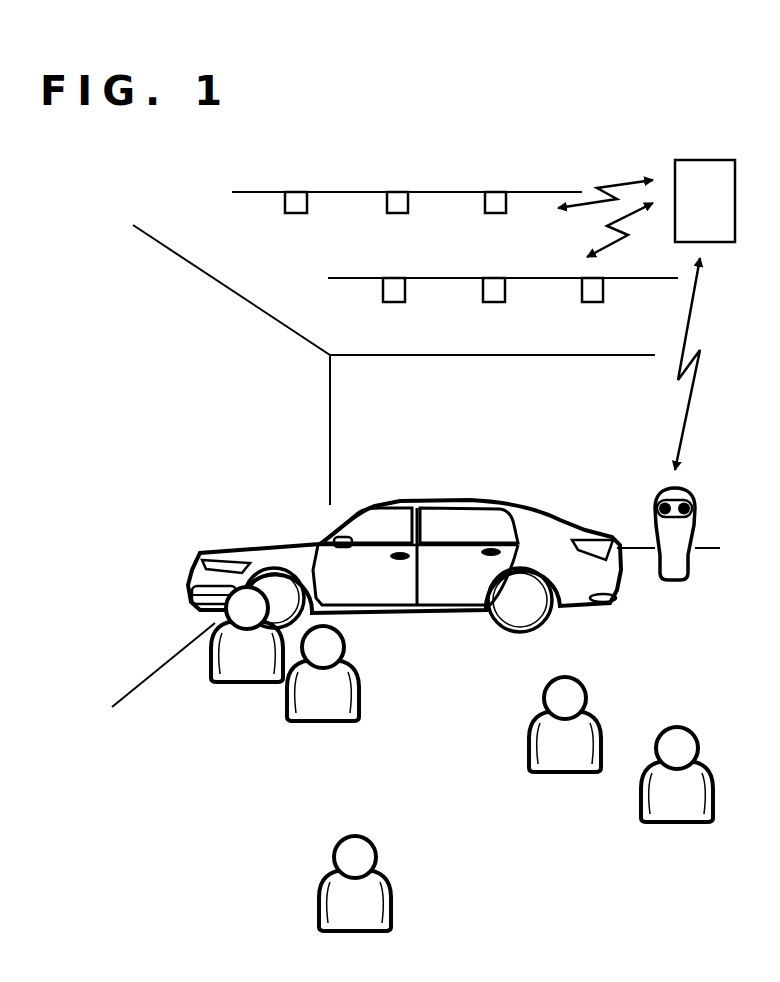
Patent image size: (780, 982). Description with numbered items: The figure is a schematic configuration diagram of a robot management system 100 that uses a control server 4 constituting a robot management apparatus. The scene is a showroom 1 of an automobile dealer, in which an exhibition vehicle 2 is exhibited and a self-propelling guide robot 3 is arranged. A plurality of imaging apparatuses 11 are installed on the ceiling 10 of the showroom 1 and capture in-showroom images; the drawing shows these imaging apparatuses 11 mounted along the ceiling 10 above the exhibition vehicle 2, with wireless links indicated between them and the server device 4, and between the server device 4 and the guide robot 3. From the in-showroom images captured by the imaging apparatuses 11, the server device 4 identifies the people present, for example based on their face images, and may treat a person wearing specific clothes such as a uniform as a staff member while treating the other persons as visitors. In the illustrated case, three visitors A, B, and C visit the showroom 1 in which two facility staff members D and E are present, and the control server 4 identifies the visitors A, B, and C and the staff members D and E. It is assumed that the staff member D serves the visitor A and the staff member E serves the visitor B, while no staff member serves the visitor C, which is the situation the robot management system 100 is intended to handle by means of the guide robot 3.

The showroom 1 is at (240, 395).
The ceiling 10 is at (228, 257).
The robot management system 100 is at (550, 153).
The imaging apparatus 11 is at (495, 214).
The control server 4 is at (672, 180).
The guide robot 3 is at (657, 495).
The exhibition vehicle 2 is at (232, 548).
The visitor A is at (238, 683).
The visitor B is at (528, 740).
The visitor C is at (319, 895).
The staff member D is at (315, 720).
The staff member E is at (641, 803).